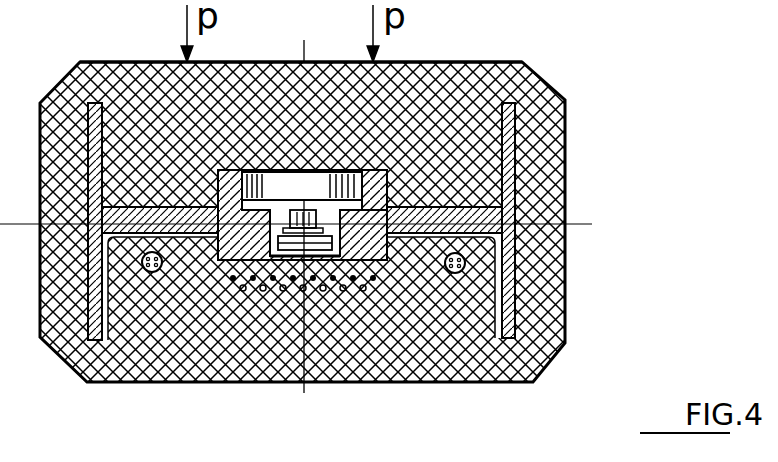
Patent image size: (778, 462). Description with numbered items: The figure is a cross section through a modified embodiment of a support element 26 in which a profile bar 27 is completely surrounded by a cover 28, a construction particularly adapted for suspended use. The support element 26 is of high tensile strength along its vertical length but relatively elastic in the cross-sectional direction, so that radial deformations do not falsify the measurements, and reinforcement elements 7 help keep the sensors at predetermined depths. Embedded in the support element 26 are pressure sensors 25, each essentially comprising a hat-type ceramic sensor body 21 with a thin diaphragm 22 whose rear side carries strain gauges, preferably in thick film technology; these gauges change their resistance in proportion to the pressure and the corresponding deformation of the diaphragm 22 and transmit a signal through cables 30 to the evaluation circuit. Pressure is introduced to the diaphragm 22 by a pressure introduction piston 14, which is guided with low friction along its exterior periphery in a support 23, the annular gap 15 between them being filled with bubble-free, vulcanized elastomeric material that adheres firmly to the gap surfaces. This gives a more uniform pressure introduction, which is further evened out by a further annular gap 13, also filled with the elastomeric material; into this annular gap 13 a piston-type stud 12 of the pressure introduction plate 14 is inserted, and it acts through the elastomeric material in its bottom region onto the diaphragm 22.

The reinforcement elements 7 is at (326, 292).
The piston-type stud 12 is at (300, 198).
The further annular gap 13 is at (450, 105).
The pressure introduction piston 14 is at (282, 182).
The annular gap 15 is at (217, 165).
The hat-type ceramic sensor body 21 is at (217, 262).
The thin diaphragm 22 is at (385, 262).
The support 23 is at (372, 168).
The pressure sensors 25 is at (207, 165).
The support element 26 is at (548, 78).
The profile bar 27 is at (514, 175).
The cover 28 is at (537, 135).
The cables 30 is at (150, 272).